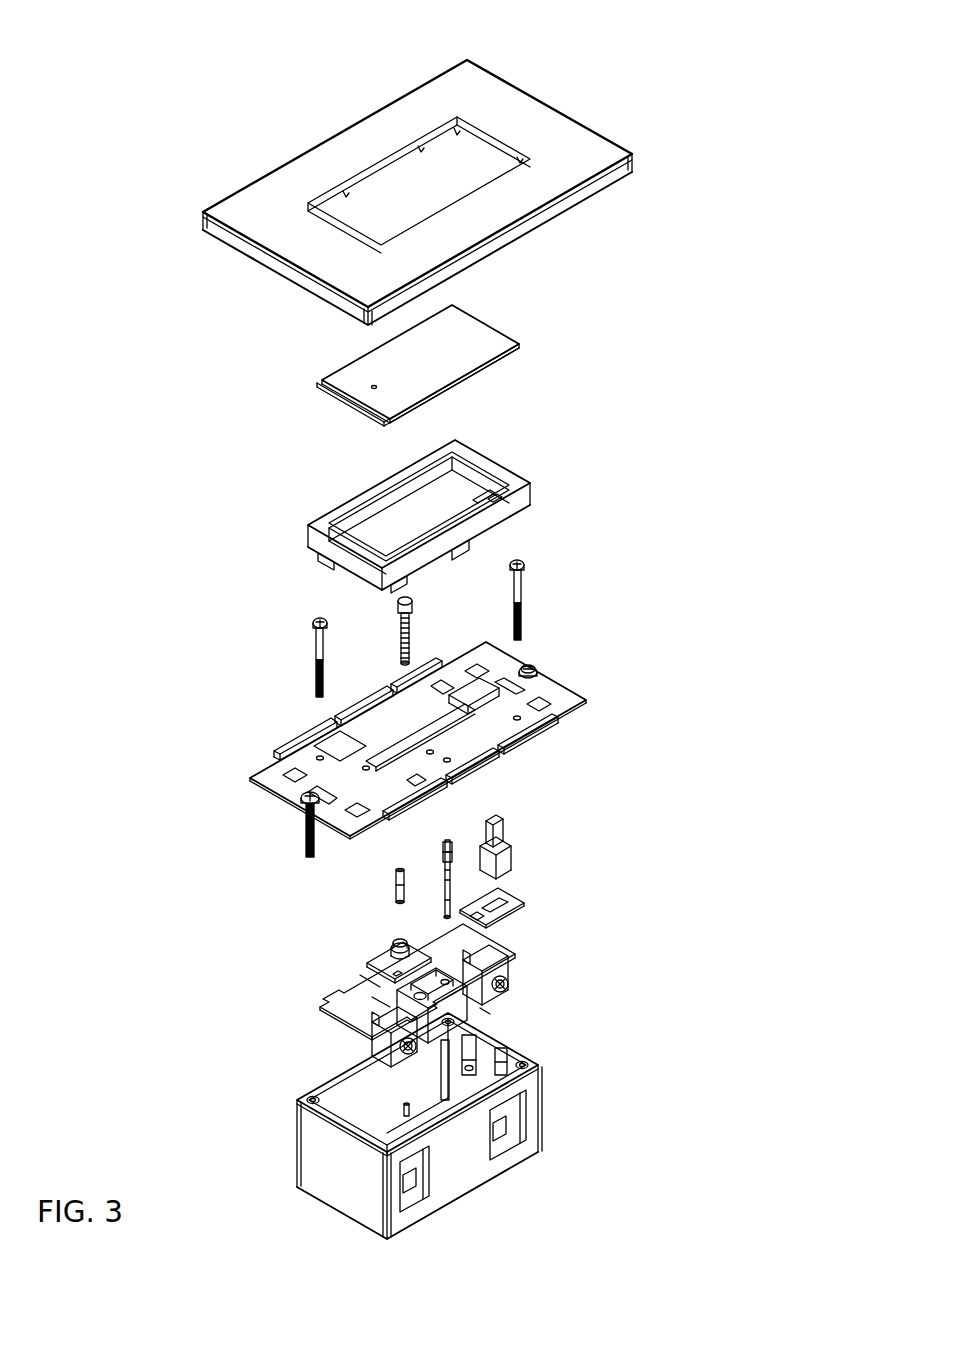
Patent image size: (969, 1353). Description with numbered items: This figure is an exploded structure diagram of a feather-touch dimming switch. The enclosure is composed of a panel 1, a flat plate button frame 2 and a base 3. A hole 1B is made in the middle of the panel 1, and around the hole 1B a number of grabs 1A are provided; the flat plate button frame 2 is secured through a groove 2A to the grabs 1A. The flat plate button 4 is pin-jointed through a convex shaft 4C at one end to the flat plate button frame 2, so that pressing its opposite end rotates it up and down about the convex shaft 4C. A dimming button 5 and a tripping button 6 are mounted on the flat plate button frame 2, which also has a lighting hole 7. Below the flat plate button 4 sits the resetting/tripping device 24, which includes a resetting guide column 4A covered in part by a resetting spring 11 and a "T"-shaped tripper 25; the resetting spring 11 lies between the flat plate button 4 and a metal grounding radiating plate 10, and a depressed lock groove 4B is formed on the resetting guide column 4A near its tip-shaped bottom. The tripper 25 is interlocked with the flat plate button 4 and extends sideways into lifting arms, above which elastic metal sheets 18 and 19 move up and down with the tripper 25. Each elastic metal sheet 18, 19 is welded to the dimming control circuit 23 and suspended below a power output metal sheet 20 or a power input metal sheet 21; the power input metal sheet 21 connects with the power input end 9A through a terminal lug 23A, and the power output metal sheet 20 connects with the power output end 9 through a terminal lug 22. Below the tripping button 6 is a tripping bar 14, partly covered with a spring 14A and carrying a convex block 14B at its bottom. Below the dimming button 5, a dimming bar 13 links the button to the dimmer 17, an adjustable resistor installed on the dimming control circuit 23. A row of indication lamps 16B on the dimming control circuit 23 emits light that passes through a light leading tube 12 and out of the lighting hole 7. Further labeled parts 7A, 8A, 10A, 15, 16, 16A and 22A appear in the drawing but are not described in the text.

The panel 1 is at (416, 175).
The grabs 1A is at (460, 133).
The hole 1B is at (378, 190).
The flat plate button frame 2 is at (442, 651).
The groove 2A is at (373, 573).
The base 3 is at (462, 1168).
The flat plate button 4 is at (406, 588).
The resetting guide column 4A is at (410, 645).
The depressed lock groove 4B is at (405, 658).
The convex shaft 4C is at (386, 428).
The dimming button 5 is at (374, 387).
The tripping button 6 is at (453, 528).
The lighting hole 7 is at (505, 500).
The tab 7A is at (490, 822).
The screw 8A is at (530, 670).
The power output end 9 is at (417, 1053).
The power input end 9A is at (513, 990).
The metal grounding radiating plate 10 is at (459, 740).
The strap slot 10A is at (470, 713).
The resetting spring 11 is at (423, 619).
The light leading tube 12 is at (561, 826).
The dimming bar 13 is at (395, 897).
The tripping bar 14 is at (429, 858).
The spring 14A is at (448, 840).
The convex block 14B is at (445, 910).
The screw 15 is at (520, 590).
The button base 16 is at (370, 939).
The plate 16A is at (542, 913).
The indication lamps 16B is at (490, 915).
The dimmer 17 is at (393, 947).
The elastic metal sheet 18 is at (431, 983).
The elastic metal sheet 19 is at (440, 973).
The power output metal sheet 20 is at (388, 1003).
The power input metal sheet 21 is at (480, 996).
The terminal lug 22 is at (382, 1045).
The clip 22A is at (347, 1060).
The dimming control circuit 23 is at (377, 985).
The terminal lug 23A is at (546, 980).
The resetting/tripping device 24 is at (488, 1030).
The "T"-shaped tripper 25 is at (487, 1012).